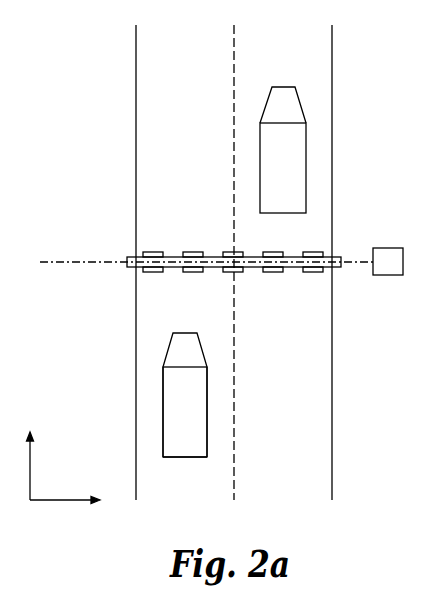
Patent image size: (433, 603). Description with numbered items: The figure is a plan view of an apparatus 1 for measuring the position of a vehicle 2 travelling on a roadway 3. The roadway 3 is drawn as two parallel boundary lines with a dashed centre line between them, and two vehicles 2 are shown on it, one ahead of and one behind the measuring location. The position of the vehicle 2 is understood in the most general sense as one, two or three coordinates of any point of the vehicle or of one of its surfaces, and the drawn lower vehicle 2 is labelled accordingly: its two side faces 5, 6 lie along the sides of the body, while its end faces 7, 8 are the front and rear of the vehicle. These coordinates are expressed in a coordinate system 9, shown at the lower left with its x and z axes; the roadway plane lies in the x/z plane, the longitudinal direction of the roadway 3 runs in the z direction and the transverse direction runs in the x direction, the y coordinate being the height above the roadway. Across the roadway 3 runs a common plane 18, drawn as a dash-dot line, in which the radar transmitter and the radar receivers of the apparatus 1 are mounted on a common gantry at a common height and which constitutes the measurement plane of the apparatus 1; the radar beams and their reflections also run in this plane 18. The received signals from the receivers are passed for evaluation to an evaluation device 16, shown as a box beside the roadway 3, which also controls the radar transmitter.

The apparatus 1 is at (94, 200).
The vehicle 2 is at (305, 190).
The roadway 3 is at (145, 120).
The side face 5 is at (153, 394).
The side face 6 is at (217, 394).
The end face 7 is at (189, 324).
The end face 8 is at (186, 467).
The coordinate system 9 is at (55, 502).
The evaluation device 16 is at (393, 275).
The common plane 18 is at (80, 262).